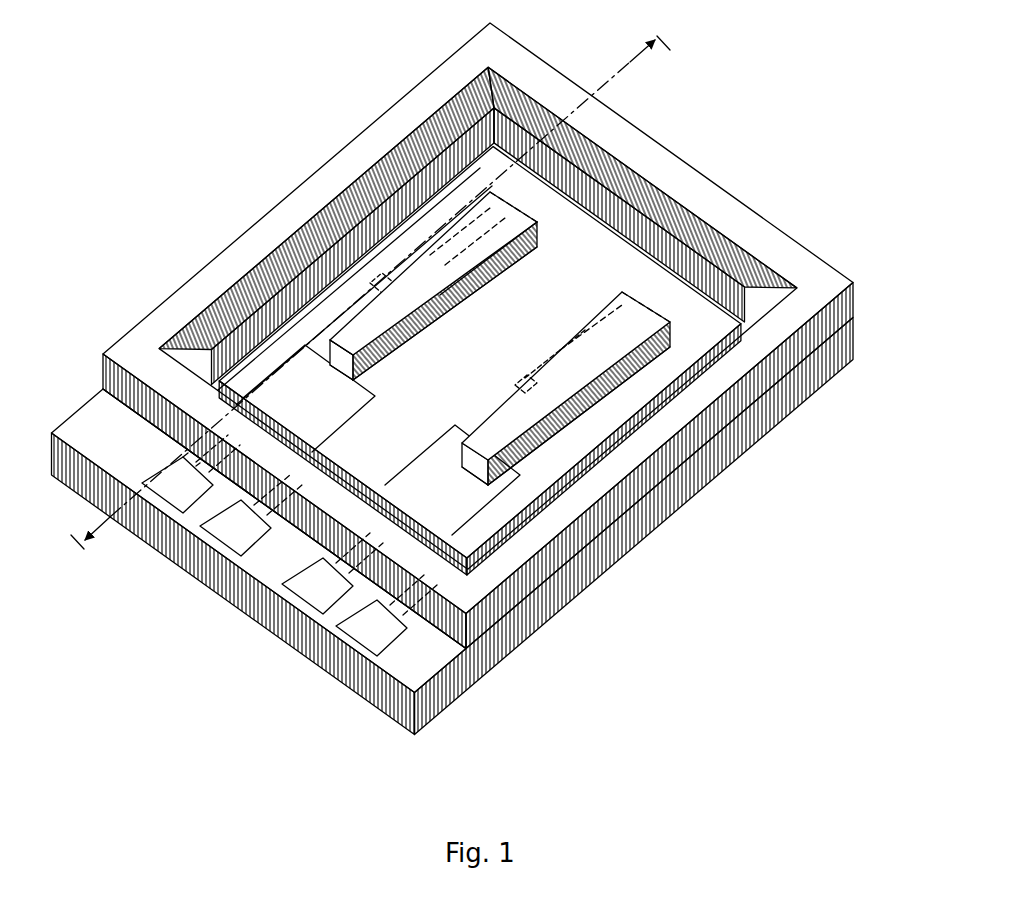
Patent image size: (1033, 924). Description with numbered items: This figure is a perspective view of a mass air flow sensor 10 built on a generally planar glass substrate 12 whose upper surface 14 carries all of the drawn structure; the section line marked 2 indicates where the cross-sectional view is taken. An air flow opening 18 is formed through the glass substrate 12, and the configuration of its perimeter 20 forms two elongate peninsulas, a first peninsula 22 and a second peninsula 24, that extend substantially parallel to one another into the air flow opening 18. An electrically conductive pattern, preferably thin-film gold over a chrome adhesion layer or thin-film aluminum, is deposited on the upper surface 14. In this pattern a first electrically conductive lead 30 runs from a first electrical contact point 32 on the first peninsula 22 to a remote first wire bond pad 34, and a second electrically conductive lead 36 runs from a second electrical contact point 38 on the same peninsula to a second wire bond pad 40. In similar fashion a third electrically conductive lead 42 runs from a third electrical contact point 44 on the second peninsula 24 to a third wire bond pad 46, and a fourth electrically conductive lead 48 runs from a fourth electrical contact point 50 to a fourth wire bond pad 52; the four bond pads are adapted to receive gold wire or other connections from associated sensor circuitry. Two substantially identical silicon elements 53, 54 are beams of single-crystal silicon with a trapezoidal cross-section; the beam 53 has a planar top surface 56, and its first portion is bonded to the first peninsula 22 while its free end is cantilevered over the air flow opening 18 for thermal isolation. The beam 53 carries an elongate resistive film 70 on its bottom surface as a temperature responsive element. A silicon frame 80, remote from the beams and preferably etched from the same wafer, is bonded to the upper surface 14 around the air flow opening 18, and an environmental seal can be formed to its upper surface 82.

The mass air flow sensor 10 is at (808, 242).
The glass substrate 12 is at (798, 380).
The upper surface 14 is at (430, 663).
The air flow opening 18 is at (577, 272).
The perimeter 20 is at (462, 344).
The first peninsula 22 is at (314, 416).
The second peninsula 24 is at (449, 526).
The first electrically conductive lead 30 is at (170, 456).
The first electrical contact point 32 is at (387, 276).
The first wire bond pad 34 is at (197, 501).
The second electrically conductive lead 36 is at (349, 379).
The second electrical contact point 38 is at (372, 338).
The second wire bond pad 40 is at (255, 544).
The third electrically conductive lead 42 is at (418, 469).
The third electrical contact point 44 is at (529, 375).
The third wire bond pad 46 is at (337, 601).
The fourth electrically conductive lead 48 is at (476, 501).
The fourth electrical contact point 50 is at (597, 397).
The fourth wire bond pad 52 is at (391, 644).
The silicon element 53 is at (477, 220).
The silicon element 54 is at (617, 368).
The top surface 56 is at (478, 268).
The resistive film 70 is at (468, 298).
The silicon frame 80 is at (212, 278).
The upper surface 82 is at (330, 180).
The section line 2- 2 is at (380, 302).